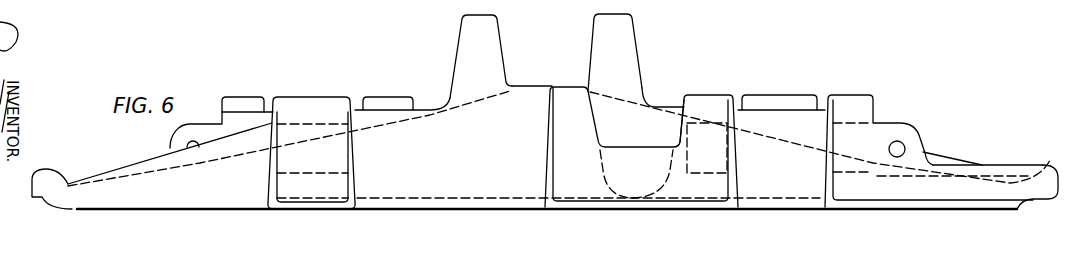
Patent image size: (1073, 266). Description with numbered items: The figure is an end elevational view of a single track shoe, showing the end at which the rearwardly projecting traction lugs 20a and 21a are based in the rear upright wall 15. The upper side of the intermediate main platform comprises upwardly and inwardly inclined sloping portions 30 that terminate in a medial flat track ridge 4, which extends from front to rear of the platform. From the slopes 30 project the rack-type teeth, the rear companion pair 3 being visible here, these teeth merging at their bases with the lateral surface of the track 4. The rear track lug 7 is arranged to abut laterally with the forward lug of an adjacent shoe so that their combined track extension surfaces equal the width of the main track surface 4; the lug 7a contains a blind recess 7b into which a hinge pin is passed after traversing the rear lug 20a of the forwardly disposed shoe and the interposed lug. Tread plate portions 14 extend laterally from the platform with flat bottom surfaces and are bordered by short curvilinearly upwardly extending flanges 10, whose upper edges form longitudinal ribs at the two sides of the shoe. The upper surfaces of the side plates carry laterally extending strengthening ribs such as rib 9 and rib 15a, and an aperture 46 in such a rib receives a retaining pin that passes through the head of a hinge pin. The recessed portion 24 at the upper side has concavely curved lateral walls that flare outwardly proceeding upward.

The rear companion pair of teeth 3 is at (600, 40).
The medial flat track ridge 4 is at (538, 85).
The rear track lug 7 is at (636, 147).
The lug 7a is at (700, 0).
The blind recess 7b is at (727, 165).
The laterally extending rib 9 is at (160, 169).
The flange 10 is at (45, 173).
The tread plate portion 14 is at (998, 14).
The rear upright wall 15 is at (560, 148).
The laterally extending rib 15a is at (122, 163).
The rearwardly projecting traction lug 20a is at (853, 100).
The rearwardly projecting traction lug 21a is at (317, 103).
The recessed portion 24 is at (632, 177).
The inclined sloping portion 30 is at (462, 103).
The aperture 46 is at (900, 152).